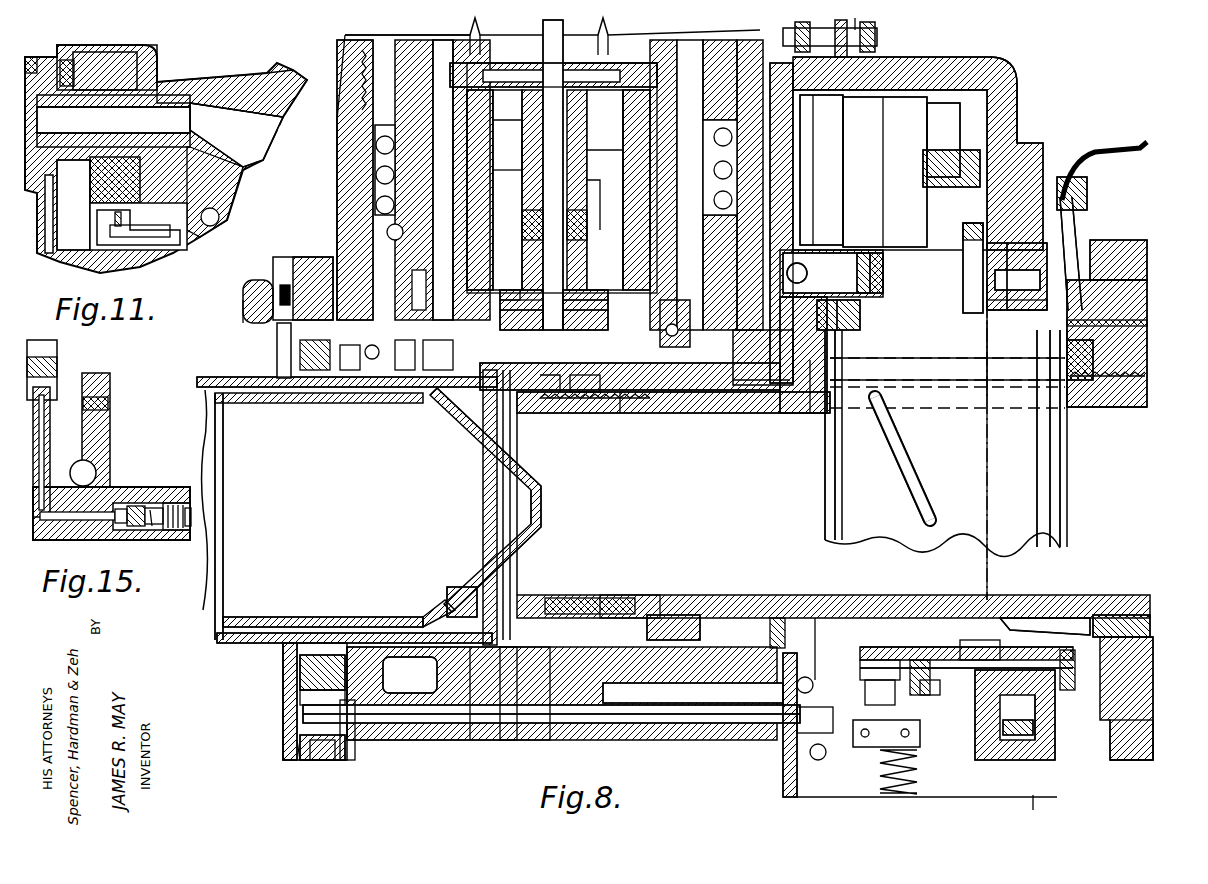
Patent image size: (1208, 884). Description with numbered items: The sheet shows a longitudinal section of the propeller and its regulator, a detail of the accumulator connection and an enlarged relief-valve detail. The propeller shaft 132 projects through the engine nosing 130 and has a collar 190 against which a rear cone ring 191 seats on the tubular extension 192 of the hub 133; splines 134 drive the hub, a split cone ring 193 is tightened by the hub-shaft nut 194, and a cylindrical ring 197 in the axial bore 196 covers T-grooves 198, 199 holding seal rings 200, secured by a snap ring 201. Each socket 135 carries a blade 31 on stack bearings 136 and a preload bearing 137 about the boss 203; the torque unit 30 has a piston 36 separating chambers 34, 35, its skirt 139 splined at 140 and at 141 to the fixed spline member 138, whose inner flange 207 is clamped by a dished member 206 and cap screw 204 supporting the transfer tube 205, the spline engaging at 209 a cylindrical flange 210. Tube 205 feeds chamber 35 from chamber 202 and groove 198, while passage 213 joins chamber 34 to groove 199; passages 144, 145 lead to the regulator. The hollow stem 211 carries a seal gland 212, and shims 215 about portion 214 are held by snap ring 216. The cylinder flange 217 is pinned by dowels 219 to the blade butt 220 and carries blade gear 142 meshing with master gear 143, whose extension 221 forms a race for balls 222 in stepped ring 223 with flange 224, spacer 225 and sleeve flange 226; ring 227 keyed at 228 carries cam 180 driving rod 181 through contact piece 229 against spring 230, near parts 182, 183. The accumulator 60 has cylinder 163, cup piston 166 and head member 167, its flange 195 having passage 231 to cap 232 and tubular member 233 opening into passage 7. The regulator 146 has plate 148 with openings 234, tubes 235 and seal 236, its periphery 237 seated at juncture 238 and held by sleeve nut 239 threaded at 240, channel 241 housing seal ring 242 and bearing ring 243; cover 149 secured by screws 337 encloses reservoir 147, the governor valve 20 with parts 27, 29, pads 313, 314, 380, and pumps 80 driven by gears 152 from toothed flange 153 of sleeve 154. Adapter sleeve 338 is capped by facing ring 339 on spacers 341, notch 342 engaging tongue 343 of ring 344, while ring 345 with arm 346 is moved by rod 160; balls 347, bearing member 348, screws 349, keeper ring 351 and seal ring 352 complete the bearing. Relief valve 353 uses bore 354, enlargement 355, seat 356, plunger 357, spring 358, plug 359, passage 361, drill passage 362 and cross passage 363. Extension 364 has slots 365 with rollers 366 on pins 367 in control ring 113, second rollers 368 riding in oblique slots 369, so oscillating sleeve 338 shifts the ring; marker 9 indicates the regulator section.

In FIG. 11, the passage 7 is at (273, 138).
In FIG. 8, the section line 9 is at (870, 26).
In FIG. 8, the governor valve 20 is at (783, 790).
In FIG. 8, the lever 27 is at (850, 747).
In FIG. 8, the spring 29 is at (917, 780).
In FIG. 8, the torque unit 30 is at (345, 95).
In FIG. 8, the blade 31 is at (380, 36).
In FIG. 8, the chamber 34 is at (610, 203).
In FIG. 8, the chamber 35 is at (360, 60).
In FIG. 8, the piston 36 is at (625, 64).
In FIG. 8, the accumulator 60 is at (225, 600).
In FIG. 8, the auxiliary pump 80 is at (895, 110).
In FIG. 8, the control ring 113 is at (885, 325).
In FIG. 8, the engine nosing 130 is at (1135, 313).
In FIG. 8, the propeller shaft 132 is at (1130, 401).
In FIG. 11, the propeller hub 133 is at (235, 82).
In FIG. 8, the propeller hub 133 is at (735, 385).
In FIG. 8, the splines 134 is at (790, 385).
In FIG. 8, the socket 135 is at (345, 120).
In FIG. 8, the stack bearings 136 is at (375, 175).
In FIG. 8, the pilot bearing 137 is at (690, 338).
In FIG. 8, the fixed spline member 138 is at (488, 191).
In FIG. 8, the skirt 139 is at (490, 175).
In FIG. 8, the helical spline connection 140 is at (440, 240).
In FIG. 8, the spline connection 141 is at (486, 255).
In FIG. 8, the blade gear 142 is at (405, 372).
In FIG. 11, the master gear 143 is at (222, 216).
In FIG. 8, the master gear 143 is at (373, 360).
In FIG. 8, the tubular passage 144 is at (545, 57).
In FIG. 8, the passage 145 is at (660, 700).
In FIG. 8, the regulator 146 is at (1010, 118).
In FIG. 8, the reservoir 147 is at (940, 105).
In FIG. 8, the regulator plate 148 is at (828, 98).
In FIG. 8, the cover member 149 is at (990, 92).
In FIG. 8, the pump driving gears 152 is at (952, 150).
In FIG. 15, the toothed flange 153 is at (57, 366).
In FIG. 8, the toothed flange 153 is at (965, 250).
In FIG. 15, the adapter sleeve 154 is at (50, 540).
In FIG. 8, the adapter sleeve 154 is at (1010, 390).
In FIG. 8, the control rod or cable 160 is at (1125, 150).
In FIG. 8, the cylinder 163 is at (222, 643).
In FIG. 8, the cup-like piston 166 is at (285, 618).
In FIG. 8, the head member 167 is at (540, 527).
In FIG. 8, the cam 180 is at (305, 700).
In FIG. 8, the rod 181 is at (685, 718).
In FIG. 8, the pivot 182 is at (797, 757).
In FIG. 8, the block 183 is at (800, 735).
In FIG. 8, the collar 190 is at (1130, 363).
In FIG. 8, the rear cone ring 191 is at (1080, 385).
In FIG. 8, the tubular extension 192 is at (1040, 625).
In FIG. 8, the split cone ring 193 is at (685, 615).
In FIG. 8, the hub-shaft nut 194 is at (635, 600).
In FIG. 11, the flange 195 is at (80, 58).
In FIG. 8, the flange 195 is at (305, 745).
In FIG. 8, the axial bore 196 is at (473, 720).
In FIG. 8, the cylindrical ring 197 is at (625, 405).
In FIG. 8, the internal groove 198 is at (553, 395).
In FIG. 8, the internal groove 199 is at (605, 400).
In FIG. 8, the fluid seal rings 200 is at (580, 390).
In FIG. 8, the snap ring 201 is at (510, 700).
In FIG. 8, the chamber 202 is at (580, 318).
In FIG. 8, the central boss 203 is at (510, 325).
In FIG. 8, the cap screw 204 is at (577, 305).
In FIG. 8, the transfer tube 205 is at (575, 295).
In FIG. 8, the dished member 206 is at (508, 310).
In FIG. 8, the inner flange 207 is at (470, 420).
In FIG. 8, the toothed engagement 209 is at (505, 300).
In FIG. 8, the cylindrical flange 210 is at (440, 380).
In FIG. 8, the hollow stem 211 is at (590, 170).
In FIG. 8, the seal gland 212 is at (590, 215).
In FIG. 8, the passage 213 is at (665, 400).
In FIG. 8, the stem portion 214 is at (580, 135).
In FIG. 8, the shims 215 is at (527, 135).
In FIG. 8, the snap ring 216 is at (580, 158).
In FIG. 8, the flange 217 is at (690, 315).
In FIG. 8, the driving dowel 219 is at (412, 290).
In FIG. 8, the butt end 220 is at (390, 228).
In FIG. 11, the sleeved extension 221 is at (170, 252).
In FIG. 8, the sleeved extension 221 is at (330, 372).
In FIG. 11, the balls 222 is at (208, 250).
In FIG. 8, the balls 222 is at (350, 372).
In FIG. 11, the stepped ring 223 is at (236, 182).
In FIG. 8, the stepped ring 223 is at (378, 700).
In FIG. 11, the cylindrical flange 224 is at (143, 52).
In FIG. 11, the spacer 225 is at (125, 70).
In FIG. 11, the flange 226 is at (75, 252).
In FIG. 8, the flange 226 is at (290, 670).
In FIG. 11, the ring 227 is at (118, 183).
In FIG. 8, the ring 227 is at (308, 690).
In FIG. 8, the ring and key device 228 is at (305, 387).
In FIG. 8, the contact piece 229 is at (300, 740).
In FIG. 8, the spring 230 is at (435, 720).
In FIG. 11, the radially extending passage 231 is at (55, 262).
In FIG. 8, the radially extending passage 231 is at (277, 340).
In FIG. 11, the cap member 232 is at (50, 48).
In FIG. 8, the cap member 232 is at (250, 316).
In FIG. 11, the tubular member 233 is at (120, 104).
In FIG. 8, the tubular member 233 is at (250, 297).
In FIG. 8, the openings 234 is at (806, 675).
In FIG. 8, the embedded tubular members 235 is at (820, 640).
In FIG. 8, the resilient seal ring 236 is at (775, 620).
In FIG. 8, the inner periphery 237 is at (835, 356).
In FIG. 8, the juncture 238 is at (765, 400).
In FIG. 8, the sleeve nut 239 is at (985, 645).
In FIG. 8, the threads 240 is at (1075, 650).
In FIG. 8, the annular channel 241 is at (810, 415).
In FIG. 8, the resilient seal ring 242 is at (826, 313).
In FIG. 8, the adapter bearing ring 243 is at (848, 310).
In FIG. 8, the bore 313 is at (820, 260).
In FIG. 8, the plug 314 is at (850, 258).
In FIG. 8, the screw devices 337 is at (880, 45).
In FIG. 8, the adapter sleeve 338 is at (832, 480).
In FIG. 8, the facing ring 339 is at (1060, 462).
In FIG. 8, the spacers 341 is at (1075, 675).
In FIG. 8, the notch 342 is at (1038, 710).
In FIG. 8, the tongue 343 is at (1035, 700).
In FIG. 8, the ring 344 is at (1130, 737).
In FIG. 8, the ring 345 is at (1070, 325).
In FIG. 8, the arm 346 is at (1080, 235).
In FIG. 15, the balls 347 is at (90, 468).
In FIG. 8, the balls 347 is at (960, 325).
In FIG. 15, the bearing member 348 is at (108, 418).
In FIG. 8, the bearing member 348 is at (990, 300).
In FIG. 8, the screw devices 349 is at (1075, 218).
In FIG. 8, the keeper ring 351 is at (1005, 250).
In FIG. 8, the seal ring 352 is at (1140, 278).
In FIG. 15, the relief valve 353 is at (185, 439).
In FIG. 8, the relief valve 353 is at (1030, 345).
In FIG. 15, the axial bore 354 is at (72, 532).
In FIG. 15, the enlargement 355 is at (122, 526).
In FIG. 15, the seat 356 is at (136, 505).
In FIG. 15, the valve plunger 357 is at (155, 505).
In FIG. 15, the spring 358 is at (160, 530).
In FIG. 15, the screw plug 359 is at (180, 503).
In FIG. 15, the passage 361 is at (143, 535).
In FIG. 15, the drill passage 362 is at (45, 400).
In FIG. 8, the drill passage 362 is at (975, 287).
In FIG. 15, the cross passage 363 is at (50, 380).
In FIG. 8, the extension 364 is at (885, 320).
In FIG. 8, the straight slot 365 is at (885, 690).
In FIG. 8, the roller 366 is at (880, 660).
In FIG. 8, the pin 367 is at (935, 690).
In FIG. 8, the second roller 368 is at (925, 660).
In FIG. 8, the oblique slot 369 is at (910, 465).
In FIG. 8, the bore 380 is at (803, 265).